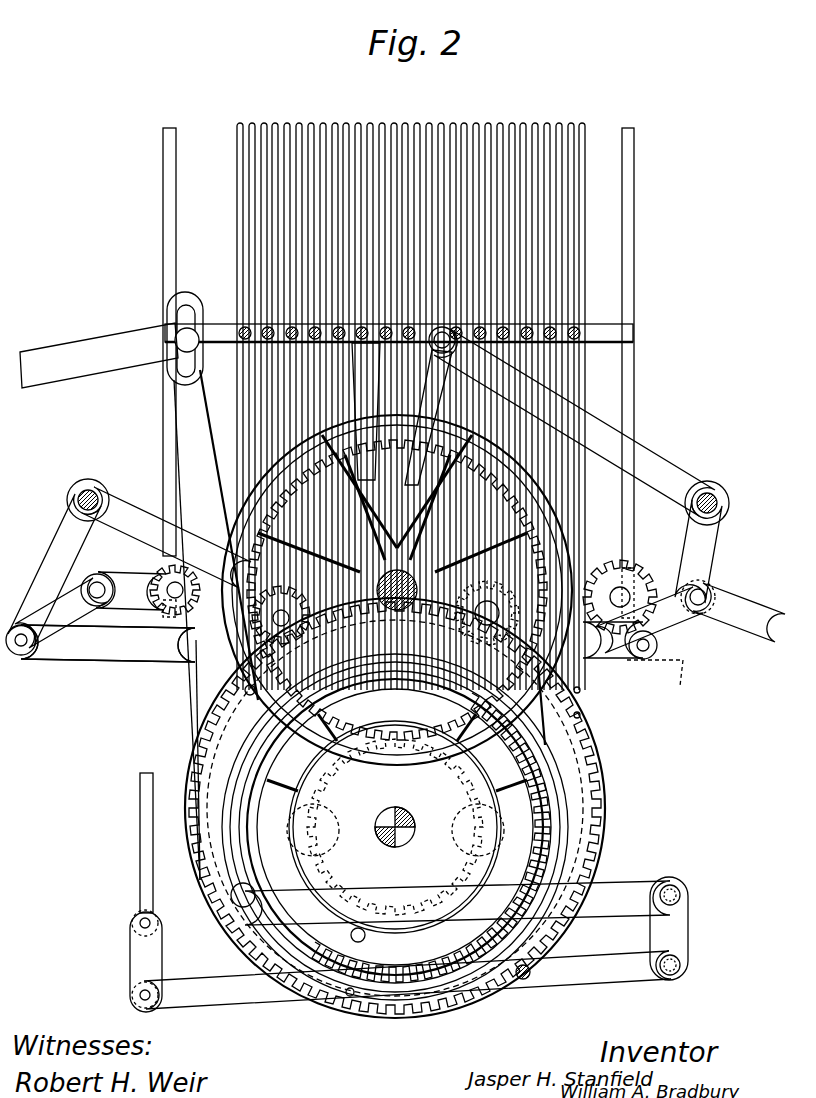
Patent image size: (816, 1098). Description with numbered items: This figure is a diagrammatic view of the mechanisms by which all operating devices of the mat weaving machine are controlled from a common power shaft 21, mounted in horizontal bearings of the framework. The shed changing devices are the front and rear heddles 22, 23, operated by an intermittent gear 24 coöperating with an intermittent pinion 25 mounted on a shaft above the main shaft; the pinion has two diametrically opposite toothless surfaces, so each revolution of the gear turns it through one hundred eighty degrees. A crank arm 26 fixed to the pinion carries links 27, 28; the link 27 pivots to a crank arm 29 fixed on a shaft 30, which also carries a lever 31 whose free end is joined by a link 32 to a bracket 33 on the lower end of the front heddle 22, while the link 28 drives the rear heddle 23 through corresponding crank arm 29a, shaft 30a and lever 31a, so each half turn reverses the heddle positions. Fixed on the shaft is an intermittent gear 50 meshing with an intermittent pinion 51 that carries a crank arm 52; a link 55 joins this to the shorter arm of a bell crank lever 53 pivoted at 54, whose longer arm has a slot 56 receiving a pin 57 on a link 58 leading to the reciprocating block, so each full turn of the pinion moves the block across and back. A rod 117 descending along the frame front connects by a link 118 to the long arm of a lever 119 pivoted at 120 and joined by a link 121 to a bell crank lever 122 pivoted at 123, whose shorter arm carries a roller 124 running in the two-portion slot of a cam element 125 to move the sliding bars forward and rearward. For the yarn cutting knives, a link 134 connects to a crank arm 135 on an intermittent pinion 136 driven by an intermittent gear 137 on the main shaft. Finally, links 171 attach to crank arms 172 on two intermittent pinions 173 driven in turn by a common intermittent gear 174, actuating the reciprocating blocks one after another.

The power shaft 21 is at (395, 839).
The front heddle 22 is at (636, 337).
The rear heddle 23 is at (634, 410).
The intermittent gear 24 is at (200, 758).
The intermittent pinion 25 is at (196, 690).
The crank arm 26 is at (246, 691).
The link 27 is at (662, 660).
The link 28 is at (75, 662).
The crank arm 29 is at (710, 558).
The crank arm 29a is at (70, 523).
The shaft 30 is at (712, 494).
The shaft 30a is at (89, 490).
The lever 31 is at (675, 472).
The lever 31a is at (128, 505).
The link 32 is at (432, 388).
The bracket 33 is at (402, 414).
The intermittent gear 50 is at (535, 822).
The intermittent pinion 51 is at (578, 691).
The crank arm 52 is at (460, 533).
The bell crank lever 53 is at (192, 402).
The pivot 54 is at (231, 895).
The link 55 is at (556, 749).
The slot 56 is at (188, 306).
The pin 57 is at (196, 340).
The link 58 is at (118, 350).
The rod 117 is at (146, 828).
The link 118 is at (150, 950).
The lever 119 is at (262, 990).
The pivot 120 is at (526, 978).
The link 121 is at (690, 930).
The bell crank lever 122 is at (640, 884).
The pivot 123 is at (350, 996).
The roller 124 is at (300, 1036).
The cam element 125 is at (500, 833).
The link 134 is at (680, 686).
The crank arm 135 is at (196, 650).
The intermittent pinion 136 is at (207, 622).
The intermittent gear 137 is at (190, 772).
The link 171 is at (40, 582).
The crank arm 172 is at (105, 580).
The intermittent pinion 173 is at (158, 576).
The intermittent gear 174 is at (578, 716).